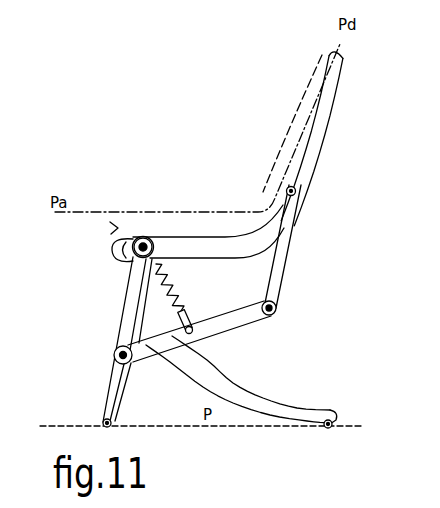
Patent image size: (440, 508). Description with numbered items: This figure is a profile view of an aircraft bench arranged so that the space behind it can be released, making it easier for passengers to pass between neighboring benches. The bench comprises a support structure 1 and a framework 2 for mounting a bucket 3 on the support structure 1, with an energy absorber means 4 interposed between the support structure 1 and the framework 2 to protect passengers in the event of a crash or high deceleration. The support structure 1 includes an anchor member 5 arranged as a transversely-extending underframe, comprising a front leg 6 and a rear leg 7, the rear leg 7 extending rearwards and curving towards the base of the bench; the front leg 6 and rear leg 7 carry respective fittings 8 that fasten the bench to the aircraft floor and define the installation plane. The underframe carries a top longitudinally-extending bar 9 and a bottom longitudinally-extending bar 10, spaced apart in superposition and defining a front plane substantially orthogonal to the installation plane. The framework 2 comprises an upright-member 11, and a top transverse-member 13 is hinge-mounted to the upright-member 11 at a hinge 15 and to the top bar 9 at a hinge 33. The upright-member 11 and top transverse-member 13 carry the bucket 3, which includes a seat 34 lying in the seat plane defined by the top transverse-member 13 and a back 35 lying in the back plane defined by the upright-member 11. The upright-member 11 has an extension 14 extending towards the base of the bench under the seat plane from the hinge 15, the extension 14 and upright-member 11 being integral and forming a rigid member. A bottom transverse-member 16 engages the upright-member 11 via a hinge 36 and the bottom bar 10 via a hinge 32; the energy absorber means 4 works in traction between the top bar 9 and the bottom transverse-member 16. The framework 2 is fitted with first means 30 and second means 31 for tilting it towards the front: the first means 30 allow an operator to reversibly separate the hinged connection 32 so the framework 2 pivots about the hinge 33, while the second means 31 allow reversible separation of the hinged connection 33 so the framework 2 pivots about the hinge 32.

The support structure 1 is at (86, 289).
The framework 2 is at (331, 268).
The bucket 3 is at (251, 160).
The energy absorber means 4 is at (172, 289).
The anchor member 5 is at (316, 380).
The front leg 6 is at (123, 315).
The rear leg 7 is at (272, 376).
The fitting 8 is at (111, 416).
The top longitudinally-extending bar 9 is at (114, 262).
The bottom longitudinally-extending bar 10 is at (142, 360).
The upright-member 11 is at (329, 132).
The top transverse-member 13 is at (207, 237).
The extension 14 is at (289, 247).
The hinge 15 is at (296, 186).
The bottom transverse-member 16 is at (228, 313).
The first means 30 is at (108, 365).
The second means 31 is at (106, 254).
The hinge 32 is at (114, 351).
The hinge 33 is at (142, 237).
The seat 34 is at (120, 228).
The back 35 is at (310, 88).
The hinge 36 is at (276, 314).